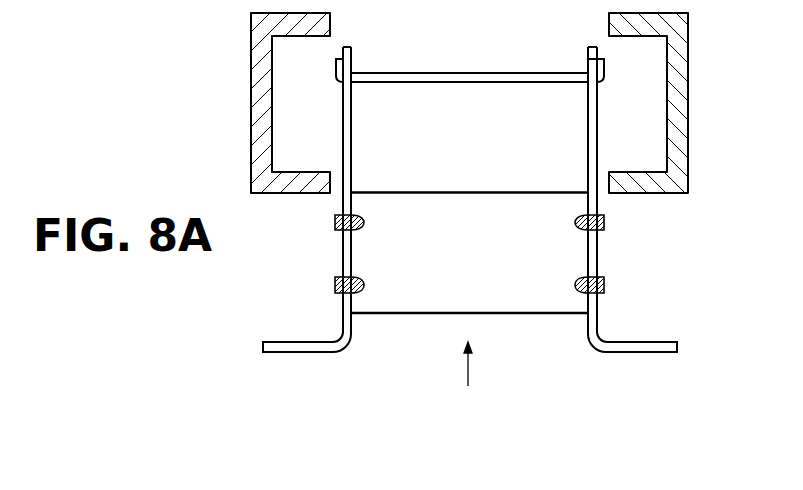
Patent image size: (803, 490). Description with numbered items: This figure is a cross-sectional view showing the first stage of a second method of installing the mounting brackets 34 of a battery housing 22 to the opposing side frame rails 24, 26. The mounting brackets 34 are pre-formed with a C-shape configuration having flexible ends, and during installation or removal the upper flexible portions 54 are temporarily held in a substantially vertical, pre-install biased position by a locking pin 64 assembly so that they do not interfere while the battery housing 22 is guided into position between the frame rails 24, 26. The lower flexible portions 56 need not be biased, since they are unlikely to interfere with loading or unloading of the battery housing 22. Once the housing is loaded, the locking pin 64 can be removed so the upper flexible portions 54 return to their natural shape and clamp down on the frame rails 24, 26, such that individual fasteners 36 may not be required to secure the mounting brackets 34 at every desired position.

The battery housing 22 is at (460, 193).
The frame rail 24 is at (250, 127).
The frame rail 26 is at (689, 122).
The mounting bracket 34 is at (598, 154).
The fastener 36 is at (364, 288).
The upper flexible portion 54 is at (352, 62).
The lower flexible portion 56 is at (322, 353).
The locking pin 64 is at (503, 84).